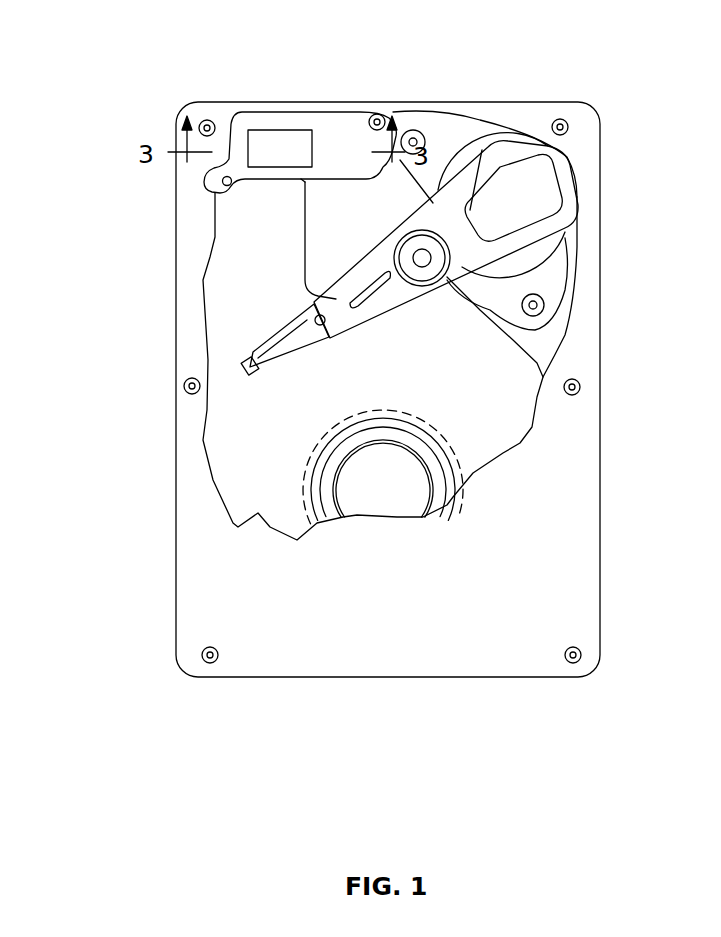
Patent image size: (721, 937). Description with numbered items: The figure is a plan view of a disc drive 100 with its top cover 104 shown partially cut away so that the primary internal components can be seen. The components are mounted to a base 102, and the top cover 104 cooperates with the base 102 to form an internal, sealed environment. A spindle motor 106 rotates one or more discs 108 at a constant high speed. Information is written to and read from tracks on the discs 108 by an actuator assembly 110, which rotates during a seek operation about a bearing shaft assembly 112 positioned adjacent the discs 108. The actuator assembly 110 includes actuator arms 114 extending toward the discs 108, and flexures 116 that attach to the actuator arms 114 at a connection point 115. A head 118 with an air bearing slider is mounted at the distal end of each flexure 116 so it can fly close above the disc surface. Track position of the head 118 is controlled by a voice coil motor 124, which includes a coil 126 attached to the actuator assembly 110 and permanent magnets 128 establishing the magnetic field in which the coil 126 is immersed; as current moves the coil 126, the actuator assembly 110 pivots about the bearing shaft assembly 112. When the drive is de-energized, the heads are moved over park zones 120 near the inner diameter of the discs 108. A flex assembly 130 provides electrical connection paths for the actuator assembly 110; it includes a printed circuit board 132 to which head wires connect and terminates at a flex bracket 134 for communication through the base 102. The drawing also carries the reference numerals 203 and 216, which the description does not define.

The disc drive 100 is at (150, 96).
The base 102 is at (447, 366).
The top cover 104 is at (215, 582).
The spindle motor 106 is at (383, 490).
The disc 108 is at (495, 437).
The actuator assembly 110 is at (460, 292).
The bearing shaft assembly 112 is at (428, 272).
The actuator arm 114 is at (510, 260).
The connection point 115 is at (320, 306).
The flexure 116 is at (276, 349).
The head 118 is at (240, 374).
The park zone 120 is at (338, 503).
The voice coil motor 124 is at (470, 100).
The coil 126 is at (563, 197).
The permanent magnet 128 is at (442, 162).
The flex assembly 130 is at (252, 255).
The printed circuit board 132 is at (278, 140).
The flex bracket 134 is at (303, 182).
The cover tab 203 is at (229, 144).
The screws 216 is at (206, 118).